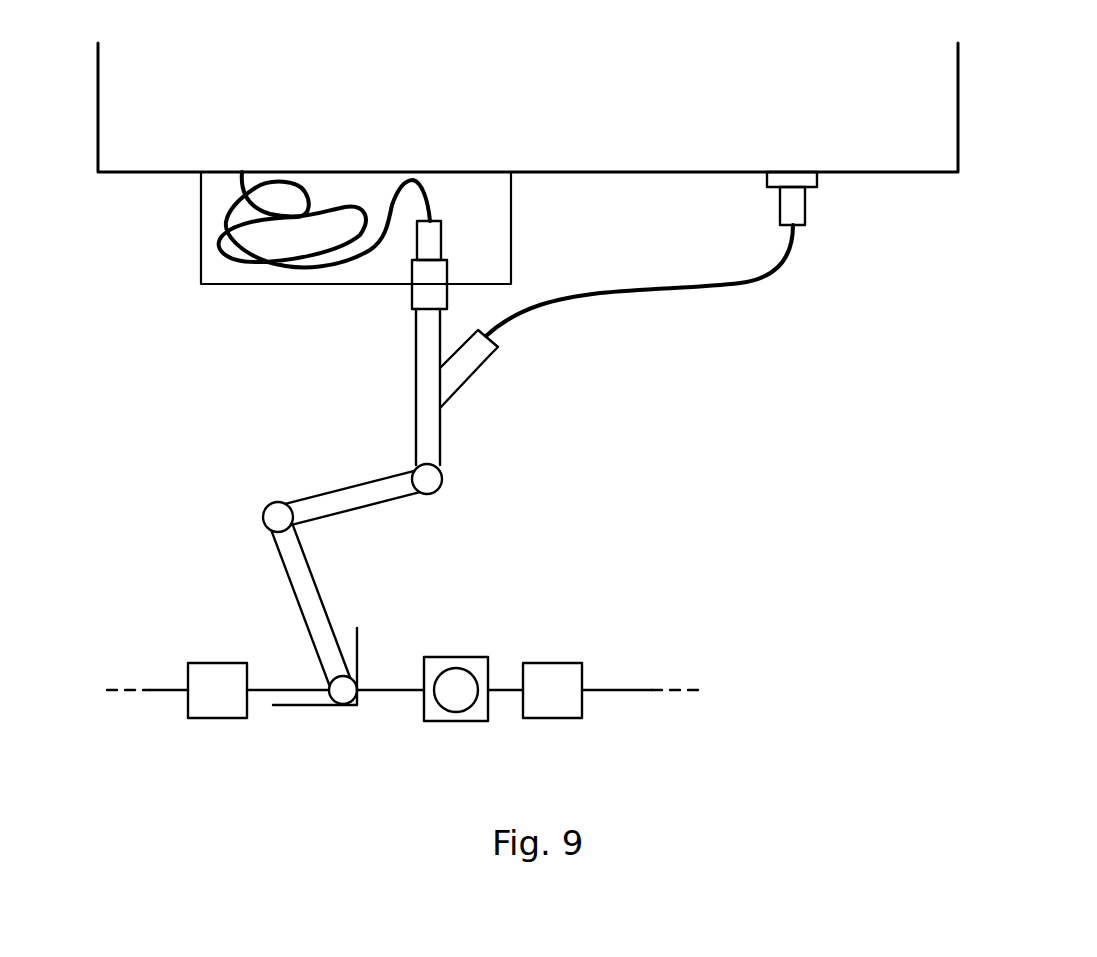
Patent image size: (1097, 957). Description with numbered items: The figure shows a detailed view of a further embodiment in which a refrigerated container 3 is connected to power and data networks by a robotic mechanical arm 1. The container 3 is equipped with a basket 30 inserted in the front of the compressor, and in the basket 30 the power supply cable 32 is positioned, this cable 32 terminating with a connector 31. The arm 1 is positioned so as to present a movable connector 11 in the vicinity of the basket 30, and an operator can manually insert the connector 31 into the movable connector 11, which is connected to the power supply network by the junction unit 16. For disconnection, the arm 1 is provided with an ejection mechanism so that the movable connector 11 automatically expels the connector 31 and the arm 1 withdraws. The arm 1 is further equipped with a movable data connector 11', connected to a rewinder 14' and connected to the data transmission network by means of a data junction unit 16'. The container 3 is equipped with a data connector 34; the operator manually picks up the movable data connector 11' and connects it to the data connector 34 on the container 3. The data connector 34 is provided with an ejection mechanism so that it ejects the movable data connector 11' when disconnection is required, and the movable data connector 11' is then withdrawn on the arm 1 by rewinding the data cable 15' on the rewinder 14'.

The container 3 is at (98, 118).
The basket 30 is at (201, 260).
The power supply cable 32 is at (270, 270).
The connector 31 is at (442, 238).
The movable connector 11 is at (392, 310).
The robotic mechanical arm 1 is at (290, 581).
The data cable 15' is at (639, 316).
The data connector 34 is at (817, 190).
The movable data connector 11' is at (732, 222).
The junction unit 16 is at (204, 638).
The rewinder 14' is at (466, 640).
The data junction unit 16' is at (553, 638).